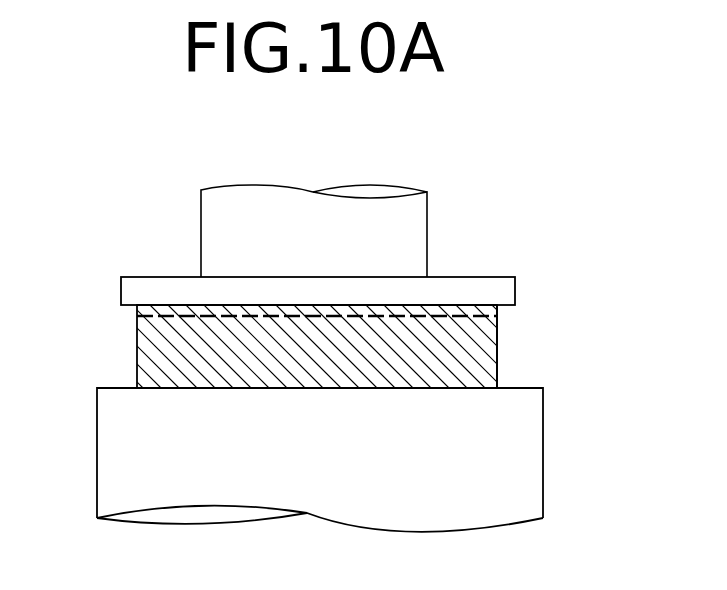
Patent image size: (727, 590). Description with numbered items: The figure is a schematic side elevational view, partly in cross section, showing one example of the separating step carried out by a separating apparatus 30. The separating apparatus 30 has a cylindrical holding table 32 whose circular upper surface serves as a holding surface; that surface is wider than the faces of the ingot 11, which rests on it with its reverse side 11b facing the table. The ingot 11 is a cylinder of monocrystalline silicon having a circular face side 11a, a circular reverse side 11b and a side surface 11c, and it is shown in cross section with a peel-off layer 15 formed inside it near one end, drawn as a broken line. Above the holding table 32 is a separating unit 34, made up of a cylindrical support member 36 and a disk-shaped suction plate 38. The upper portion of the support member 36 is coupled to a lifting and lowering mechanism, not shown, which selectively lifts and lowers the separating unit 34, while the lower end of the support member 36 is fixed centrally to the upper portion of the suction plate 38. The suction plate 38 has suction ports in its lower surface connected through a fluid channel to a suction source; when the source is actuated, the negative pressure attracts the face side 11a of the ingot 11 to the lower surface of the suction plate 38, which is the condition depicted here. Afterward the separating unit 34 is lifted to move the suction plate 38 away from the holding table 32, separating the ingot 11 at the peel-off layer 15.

The separating apparatus 30 is at (166, 185).
The separating unit 34 is at (587, 190).
The support member 36 is at (422, 225).
The suction plate 38 is at (497, 290).
The ingot 11 is at (128, 341).
The face side 11a is at (158, 302).
The reverse side 11b is at (402, 389).
The side surface 11c is at (498, 366).
The peel-off layer 15 is at (255, 316).
The holding table 32 is at (530, 480).